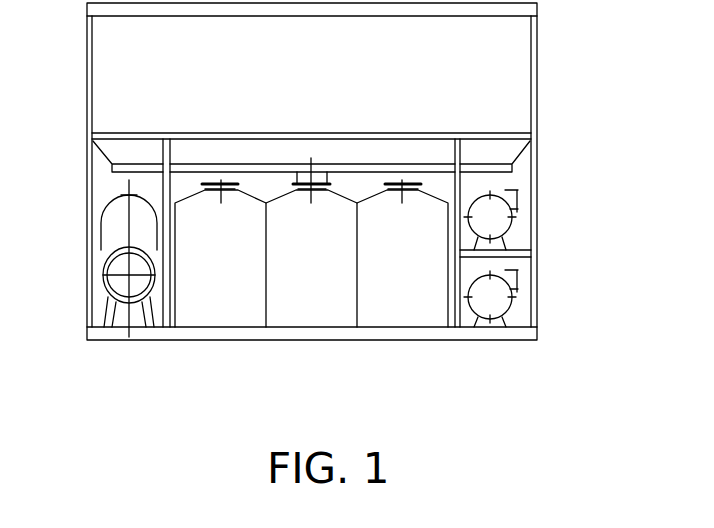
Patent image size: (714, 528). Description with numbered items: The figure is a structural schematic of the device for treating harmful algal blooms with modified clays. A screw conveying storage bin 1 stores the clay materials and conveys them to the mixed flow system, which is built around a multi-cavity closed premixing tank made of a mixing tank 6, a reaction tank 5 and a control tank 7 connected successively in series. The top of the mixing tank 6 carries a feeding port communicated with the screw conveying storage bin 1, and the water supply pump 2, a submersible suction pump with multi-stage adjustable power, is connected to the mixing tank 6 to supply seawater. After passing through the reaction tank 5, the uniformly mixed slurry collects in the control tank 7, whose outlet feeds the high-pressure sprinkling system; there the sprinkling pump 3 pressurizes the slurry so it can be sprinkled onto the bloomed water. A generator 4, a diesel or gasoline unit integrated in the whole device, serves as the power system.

The screw conveying storage bin 1 is at (497, 60).
The water supply pump 2 is at (490, 216).
The sprinkling pump 3 is at (490, 302).
The generator 4 is at (123, 230).
The reaction tank 5 is at (220, 307).
The mixing tank 6 is at (313, 310).
The control tank 7 is at (415, 307).